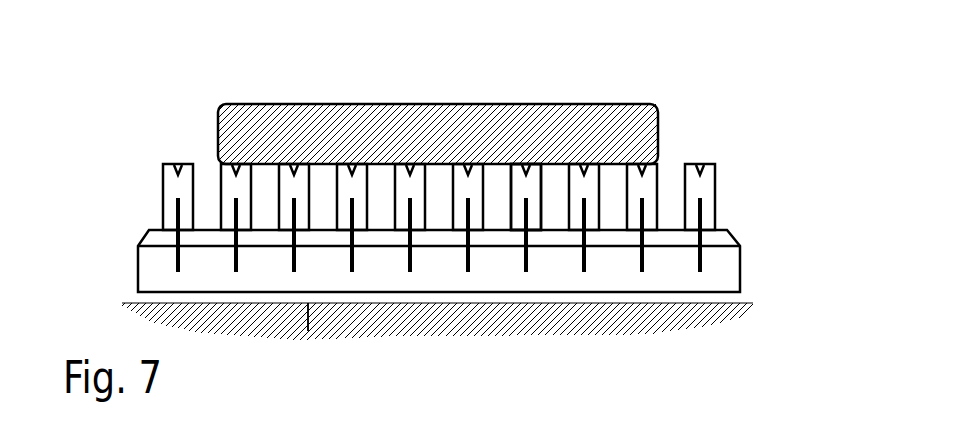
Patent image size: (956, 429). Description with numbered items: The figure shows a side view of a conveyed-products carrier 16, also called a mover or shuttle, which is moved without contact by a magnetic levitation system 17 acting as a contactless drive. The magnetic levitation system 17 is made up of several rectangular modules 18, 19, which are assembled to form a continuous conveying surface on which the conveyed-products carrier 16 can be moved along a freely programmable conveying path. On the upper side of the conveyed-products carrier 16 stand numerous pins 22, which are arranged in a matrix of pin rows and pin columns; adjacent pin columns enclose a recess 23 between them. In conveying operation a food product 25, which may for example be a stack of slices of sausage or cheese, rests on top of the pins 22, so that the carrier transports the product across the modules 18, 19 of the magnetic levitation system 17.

The conveyed-products carrier 16 is at (130, 238).
The magnetic levitation system 17 is at (740, 322).
The rectangular module 18 is at (262, 325).
The rectangular module 19 is at (461, 322).
The pin 22 is at (170, 187).
The recess 23 is at (553, 203).
The food product 25 is at (368, 140).